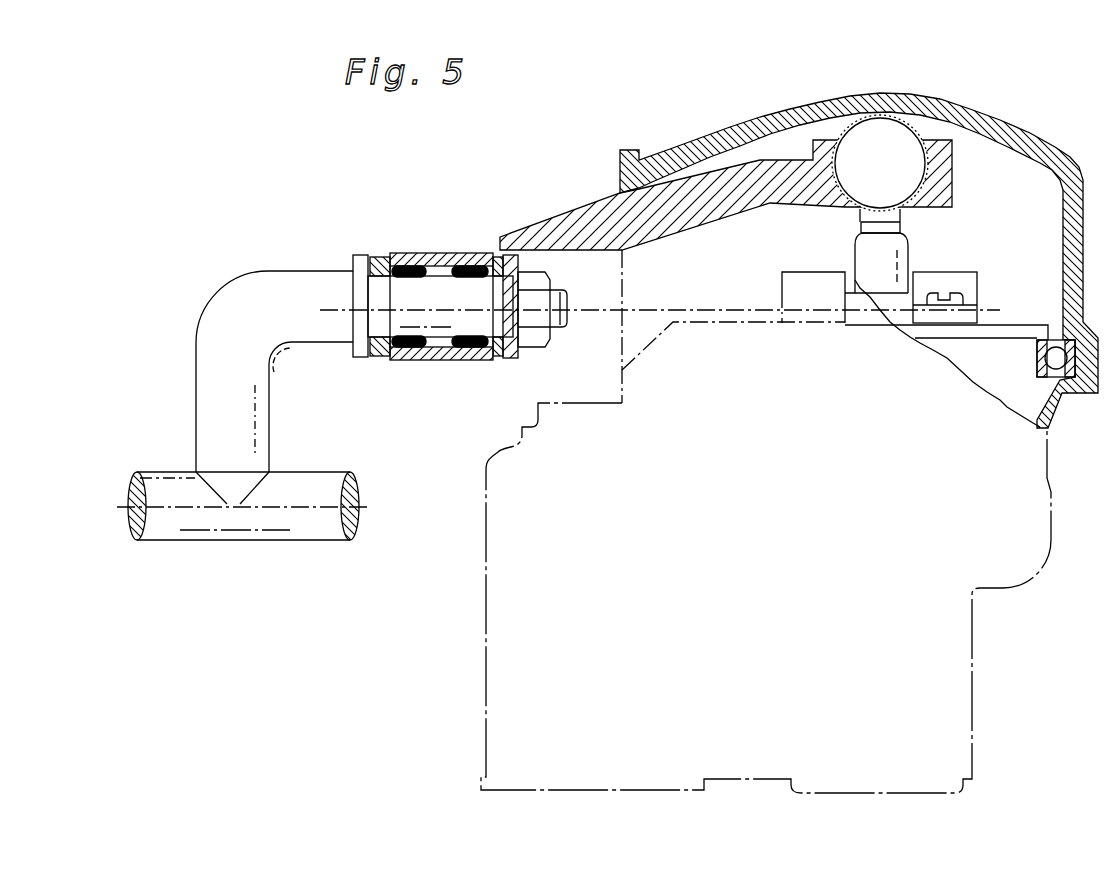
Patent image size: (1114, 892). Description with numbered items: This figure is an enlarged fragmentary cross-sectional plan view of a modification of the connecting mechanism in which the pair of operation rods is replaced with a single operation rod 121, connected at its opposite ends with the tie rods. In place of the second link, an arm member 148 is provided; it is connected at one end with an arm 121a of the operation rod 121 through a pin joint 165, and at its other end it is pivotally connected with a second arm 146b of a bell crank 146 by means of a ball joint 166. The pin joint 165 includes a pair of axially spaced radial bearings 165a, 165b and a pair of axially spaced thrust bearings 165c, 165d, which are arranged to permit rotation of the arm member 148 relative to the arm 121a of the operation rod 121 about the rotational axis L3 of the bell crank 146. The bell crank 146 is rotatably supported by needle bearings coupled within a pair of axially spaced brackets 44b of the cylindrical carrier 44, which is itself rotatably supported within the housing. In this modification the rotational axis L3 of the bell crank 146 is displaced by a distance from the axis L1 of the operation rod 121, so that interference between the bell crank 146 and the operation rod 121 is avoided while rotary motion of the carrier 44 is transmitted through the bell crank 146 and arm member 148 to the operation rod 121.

The arm of operation rod 121a is at (289, 282).
The operation rod 121 is at (330, 478).
The axis of operation rod L1 is at (318, 512).
The rotational axis of bell crank L3 is at (832, 315).
The pin joint 165 is at (432, 308).
The radial bearing 165a is at (403, 353).
The radial bearing 165b is at (470, 353).
The thrust bearing 165c is at (386, 257).
The thrust bearing 165d is at (497, 258).
The arm member 148 is at (552, 225).
The ball joint 166 is at (897, 132).
The second arm of bell crank 146b is at (893, 247).
The bell crank 146 is at (888, 322).
The bracket of carrier 44b is at (968, 276).
The carrier 44 is at (1018, 330).